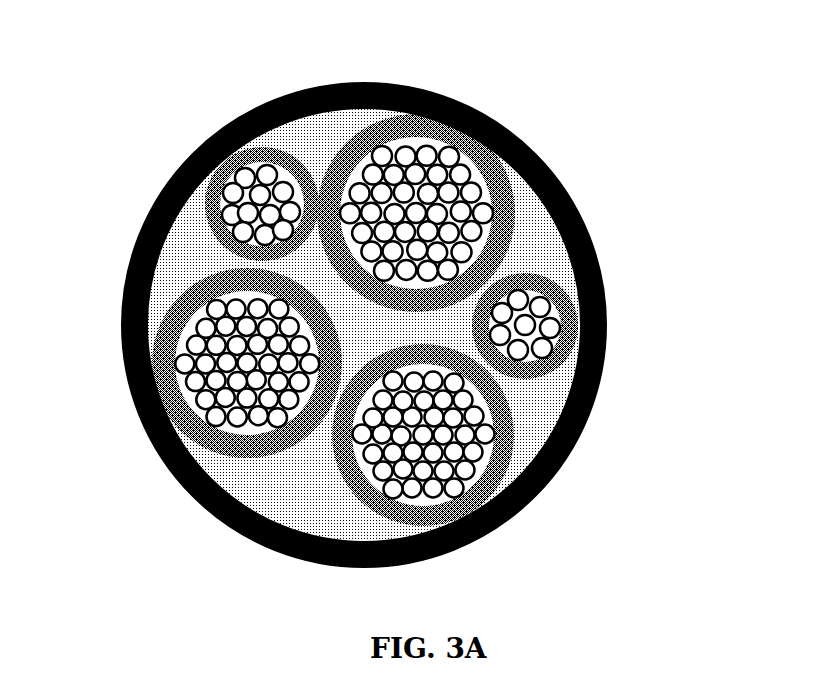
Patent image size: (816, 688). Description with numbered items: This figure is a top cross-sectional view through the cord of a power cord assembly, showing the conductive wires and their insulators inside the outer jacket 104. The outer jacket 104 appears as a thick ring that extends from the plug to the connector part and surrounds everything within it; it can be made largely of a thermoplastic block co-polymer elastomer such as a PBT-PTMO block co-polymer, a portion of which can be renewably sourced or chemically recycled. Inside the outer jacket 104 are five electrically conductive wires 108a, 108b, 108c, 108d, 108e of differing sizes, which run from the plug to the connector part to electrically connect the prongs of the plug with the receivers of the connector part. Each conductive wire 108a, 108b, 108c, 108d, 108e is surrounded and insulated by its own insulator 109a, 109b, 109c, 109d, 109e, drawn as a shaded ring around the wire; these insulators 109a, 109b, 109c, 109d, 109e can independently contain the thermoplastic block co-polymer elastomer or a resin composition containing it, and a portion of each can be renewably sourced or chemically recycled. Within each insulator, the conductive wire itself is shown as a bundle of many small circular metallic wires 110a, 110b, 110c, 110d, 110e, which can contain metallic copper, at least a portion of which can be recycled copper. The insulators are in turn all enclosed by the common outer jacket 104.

The outer jacket 104 is at (445, 325).
The electrically conductive wire 108a is at (176, 433).
The electrically conductive wire 108b is at (525, 466).
The electrically conductive wire 108c is at (614, 314).
The electrically conductive wire 108d is at (500, 160).
The electrically conductive wire 108e is at (164, 183).
The insulator 109a is at (208, 418).
The insulator 109b is at (496, 466).
The insulator 109c is at (614, 328).
The insulator 109d is at (461, 160).
The insulator 109e is at (197, 159).
The metallic wires 110a is at (164, 383).
The metallic wires 110b is at (448, 480).
The metallic wires 110c is at (619, 325).
The metallic wires 110d is at (467, 173).
The metallic wires 110e is at (155, 237).